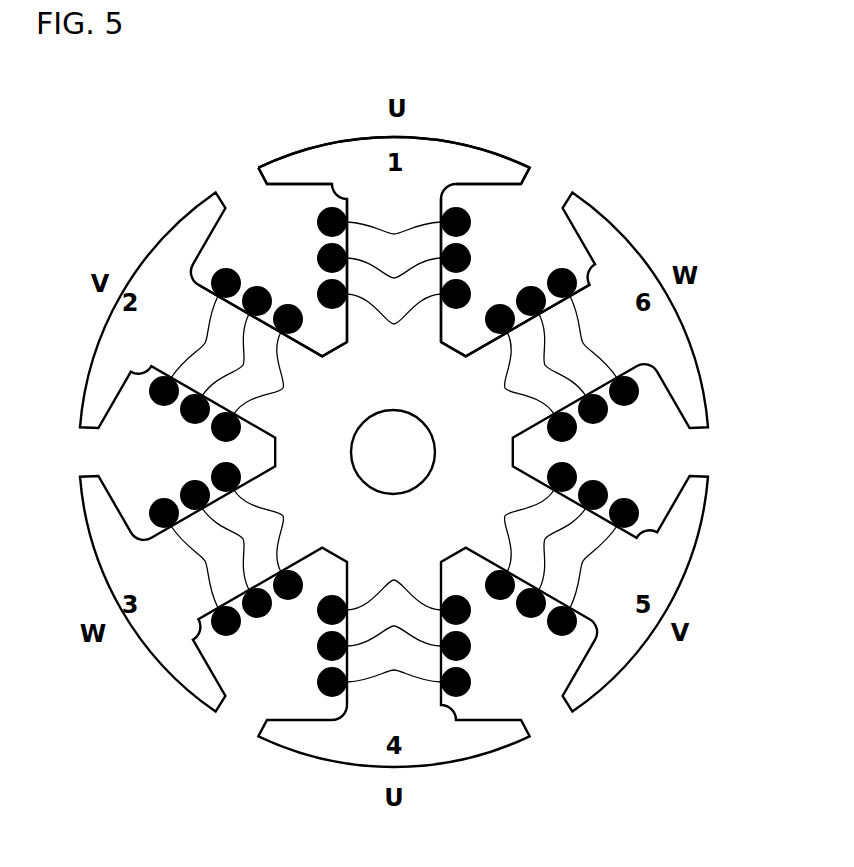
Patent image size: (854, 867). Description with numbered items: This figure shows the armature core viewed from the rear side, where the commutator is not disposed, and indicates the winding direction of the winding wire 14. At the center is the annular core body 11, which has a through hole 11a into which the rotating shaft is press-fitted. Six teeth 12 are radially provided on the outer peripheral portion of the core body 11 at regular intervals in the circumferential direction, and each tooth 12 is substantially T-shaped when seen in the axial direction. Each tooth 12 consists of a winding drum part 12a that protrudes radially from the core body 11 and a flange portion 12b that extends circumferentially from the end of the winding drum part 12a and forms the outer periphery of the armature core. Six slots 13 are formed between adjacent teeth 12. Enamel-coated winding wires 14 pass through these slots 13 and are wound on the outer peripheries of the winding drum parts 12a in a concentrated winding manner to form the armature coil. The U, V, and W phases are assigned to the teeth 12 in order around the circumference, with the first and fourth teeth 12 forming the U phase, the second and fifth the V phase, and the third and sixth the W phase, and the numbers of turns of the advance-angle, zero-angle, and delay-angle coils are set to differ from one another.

The core body 11 is at (423, 433).
The through hole 11a is at (403, 453).
The tooth 12 is at (430, 133).
The winding drum part 12a is at (418, 215).
The flange portion 12b is at (305, 168).
The slot 13 is at (262, 225).
The winding wire 14 is at (628, 407).